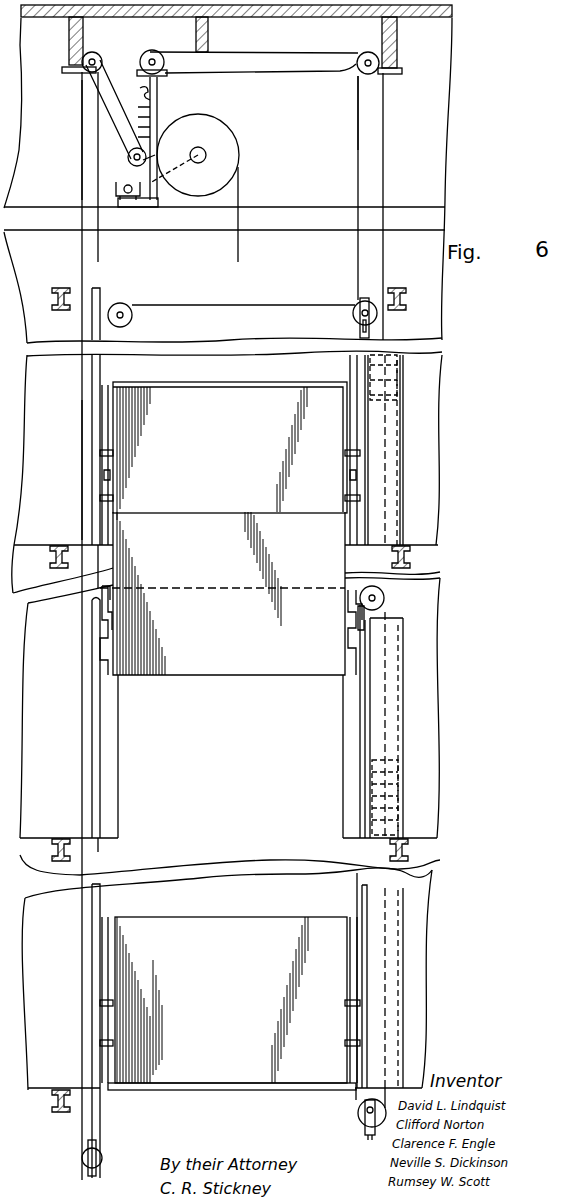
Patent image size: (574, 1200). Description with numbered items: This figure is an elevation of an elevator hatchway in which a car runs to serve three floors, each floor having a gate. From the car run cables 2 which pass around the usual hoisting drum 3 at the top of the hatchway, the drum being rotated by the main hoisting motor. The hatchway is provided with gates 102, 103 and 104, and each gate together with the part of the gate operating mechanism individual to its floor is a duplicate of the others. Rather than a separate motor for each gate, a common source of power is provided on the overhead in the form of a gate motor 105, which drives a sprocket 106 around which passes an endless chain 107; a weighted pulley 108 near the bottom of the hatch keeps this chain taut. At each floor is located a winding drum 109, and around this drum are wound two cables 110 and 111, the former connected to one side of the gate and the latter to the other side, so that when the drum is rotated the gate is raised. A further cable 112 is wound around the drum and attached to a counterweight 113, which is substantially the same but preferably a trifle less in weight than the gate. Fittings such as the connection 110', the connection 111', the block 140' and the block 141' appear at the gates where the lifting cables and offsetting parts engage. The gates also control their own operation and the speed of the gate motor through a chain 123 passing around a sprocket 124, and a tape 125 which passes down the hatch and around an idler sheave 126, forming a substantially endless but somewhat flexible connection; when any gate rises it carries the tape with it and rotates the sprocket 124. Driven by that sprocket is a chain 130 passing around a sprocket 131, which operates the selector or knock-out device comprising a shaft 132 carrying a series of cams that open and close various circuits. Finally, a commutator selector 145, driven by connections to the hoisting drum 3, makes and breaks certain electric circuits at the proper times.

The cables 2 is at (239, 250).
The hoisting drum 3 is at (239, 191).
The gate 102 is at (232, 1003).
The gate 103 is at (229, 593).
The gate 104 is at (230, 451).
The gate motor 105 is at (185, 79).
The sprocket 106 is at (357, 72).
The endless chain 107 is at (358, 158).
The weighted pulley 108 is at (358, 1113).
The winding drum 109 is at (353, 313).
The cable 110 is at (231, 316).
The car connection bracket 110' is at (73, 486).
The cable 111 is at (332, 318).
The car connection bracket 111' is at (328, 486).
The cable 112 is at (382, 333).
The counterweight 113 is at (380, 392).
The chain 123 is at (82, 148).
The sprocket 124 is at (94, 55).
The tape 125 is at (82, 456).
The idler sheave 126 is at (84, 1158).
The chain 130 is at (110, 120).
The sprocket 131 is at (128, 162).
The shaft 132 is at (152, 162).
The guide bracket 140' is at (77, 630).
The guide bracket 141' is at (347, 630).
The commutator selector 145 is at (115, 190).